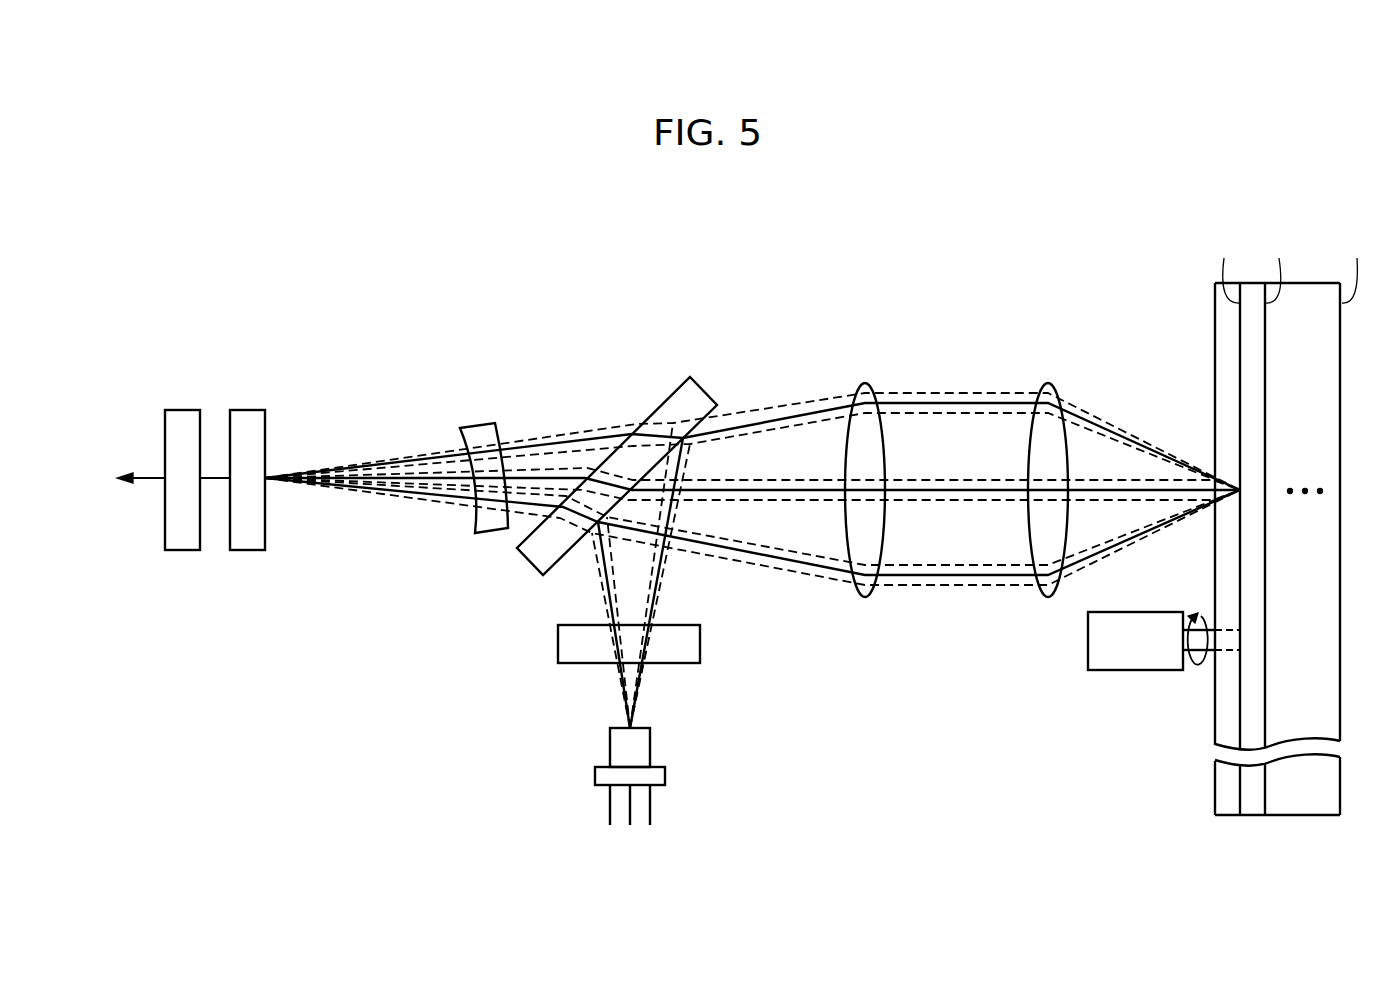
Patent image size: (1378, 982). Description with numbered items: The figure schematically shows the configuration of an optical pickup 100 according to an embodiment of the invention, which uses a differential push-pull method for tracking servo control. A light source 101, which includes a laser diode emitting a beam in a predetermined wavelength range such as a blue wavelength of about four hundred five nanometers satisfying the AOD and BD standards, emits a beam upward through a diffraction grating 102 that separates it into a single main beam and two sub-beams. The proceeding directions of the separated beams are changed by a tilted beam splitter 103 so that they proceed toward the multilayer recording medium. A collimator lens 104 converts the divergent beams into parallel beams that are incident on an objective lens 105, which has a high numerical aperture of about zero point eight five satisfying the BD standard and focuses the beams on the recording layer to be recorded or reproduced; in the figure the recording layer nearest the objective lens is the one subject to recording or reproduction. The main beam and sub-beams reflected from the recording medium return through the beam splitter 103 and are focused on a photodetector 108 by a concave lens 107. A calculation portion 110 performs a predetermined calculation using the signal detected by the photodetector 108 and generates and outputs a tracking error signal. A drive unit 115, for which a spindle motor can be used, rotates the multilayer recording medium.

The optical pickup 100 is at (967, 244).
The light source 101 is at (665, 776).
The diffraction grating 102 is at (700, 645).
The beam splitter 103 is at (689, 377).
The collimator lens 104 is at (865, 383).
The objective lens 105 is at (1048, 383).
The concave lens 107 is at (477, 424).
The photodetector 108 is at (248, 410).
The calculation portion 110 is at (183, 410).
The drive unit 115 is at (1135, 670).